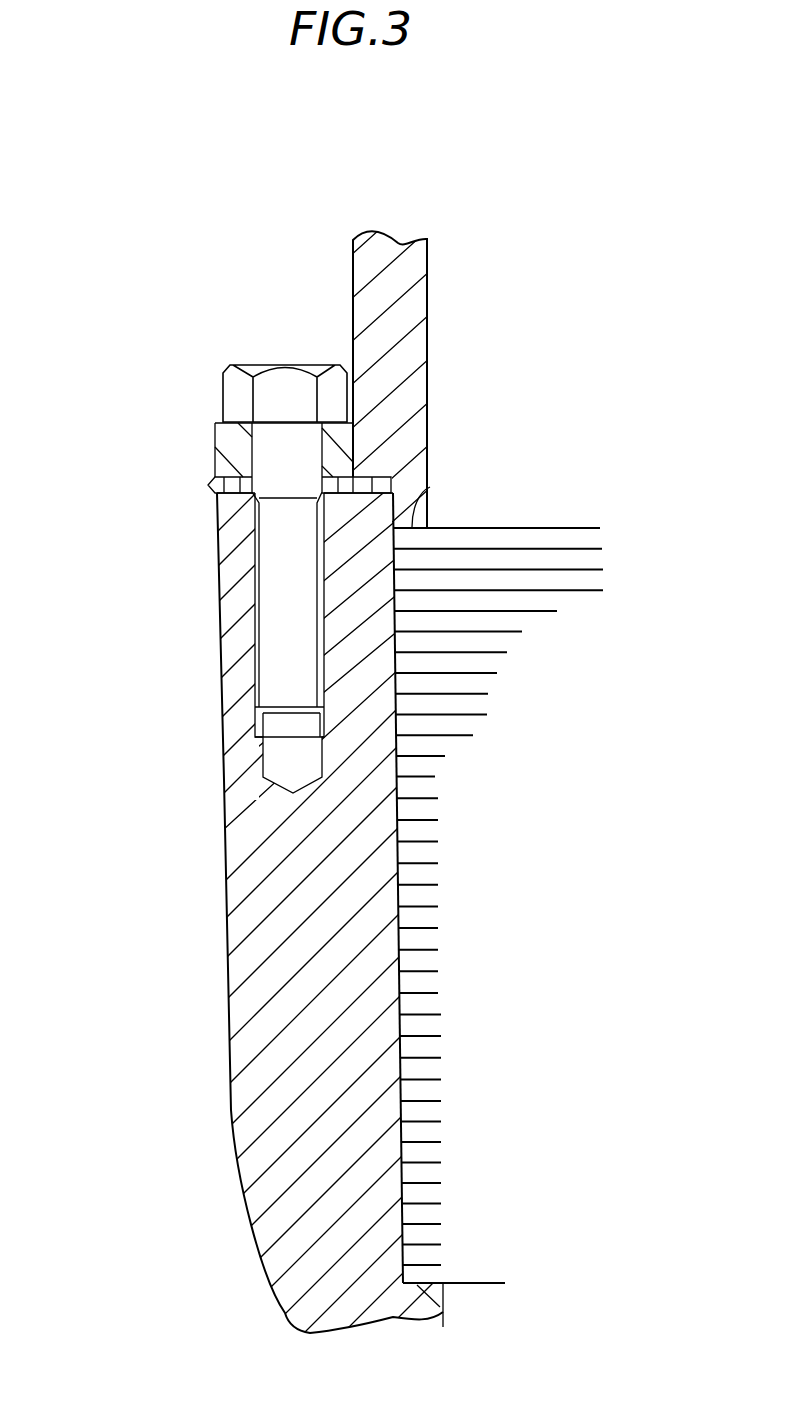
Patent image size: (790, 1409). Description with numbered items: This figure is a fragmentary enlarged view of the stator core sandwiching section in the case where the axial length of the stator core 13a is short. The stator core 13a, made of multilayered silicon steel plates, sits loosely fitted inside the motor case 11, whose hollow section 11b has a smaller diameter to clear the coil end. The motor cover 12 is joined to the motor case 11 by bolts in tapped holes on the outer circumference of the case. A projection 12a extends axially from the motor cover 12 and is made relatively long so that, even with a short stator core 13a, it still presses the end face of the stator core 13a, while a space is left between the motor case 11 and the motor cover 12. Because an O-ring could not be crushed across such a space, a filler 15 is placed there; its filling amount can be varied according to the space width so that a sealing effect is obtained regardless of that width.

The motor case 11 is at (237, 933).
The hollow section to clear the coil end 11b is at (443, 1312).
The motor cover 12 is at (372, 290).
The projection 12a is at (430, 487).
The stator core 13a is at (422, 893).
The filler 15 is at (208, 485).